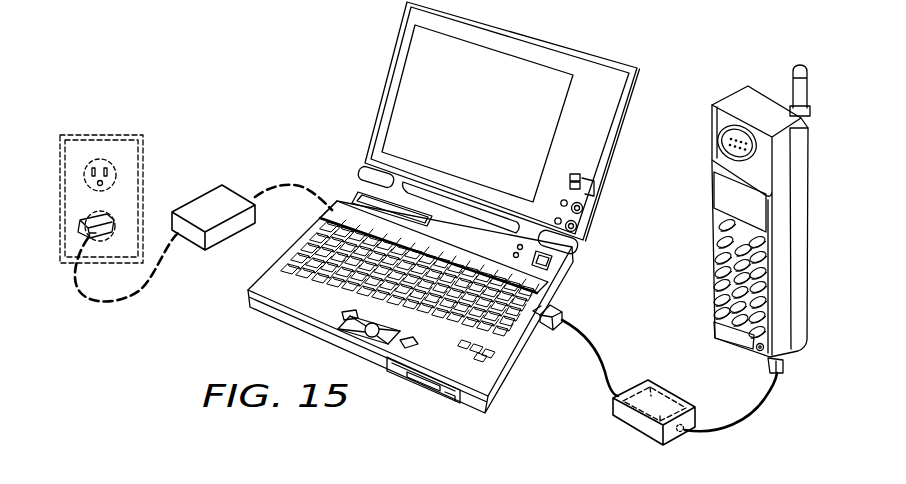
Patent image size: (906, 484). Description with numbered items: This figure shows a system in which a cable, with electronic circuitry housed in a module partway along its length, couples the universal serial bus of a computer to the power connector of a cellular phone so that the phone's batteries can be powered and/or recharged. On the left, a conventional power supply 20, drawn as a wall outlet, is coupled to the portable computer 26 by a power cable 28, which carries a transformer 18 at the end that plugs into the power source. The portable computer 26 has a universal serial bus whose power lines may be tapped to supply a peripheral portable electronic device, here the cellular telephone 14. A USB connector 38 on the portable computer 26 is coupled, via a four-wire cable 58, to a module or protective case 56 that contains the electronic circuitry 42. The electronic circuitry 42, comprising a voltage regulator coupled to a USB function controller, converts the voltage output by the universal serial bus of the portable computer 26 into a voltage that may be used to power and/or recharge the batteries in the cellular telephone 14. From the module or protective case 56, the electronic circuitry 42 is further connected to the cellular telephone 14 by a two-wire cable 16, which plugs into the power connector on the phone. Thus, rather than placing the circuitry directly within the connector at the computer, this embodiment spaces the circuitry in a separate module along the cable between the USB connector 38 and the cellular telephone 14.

The cellular telephone 14 is at (745, 88).
The two-wire cable 16 is at (737, 422).
The transformer 18 is at (211, 199).
The conventional power supply 20 is at (103, 160).
The portable computer 26 is at (472, 128).
The power cable 28 is at (110, 305).
The USB connector 38 is at (558, 308).
The electronic circuitry 42 is at (665, 398).
The module or protective case 56 is at (641, 433).
The four-wire cable 58 is at (586, 345).